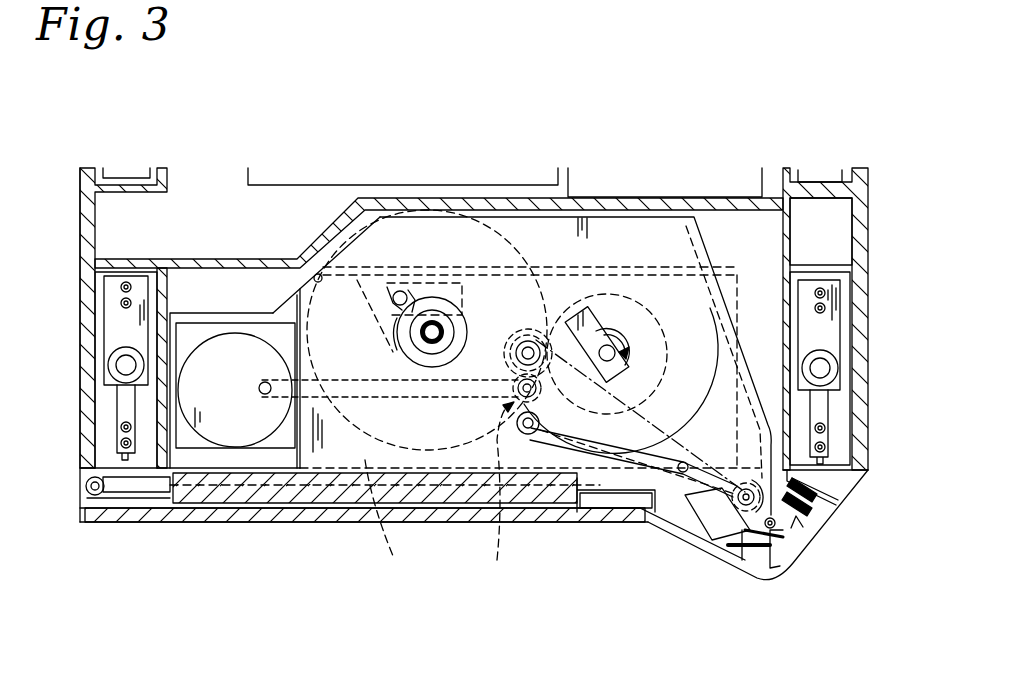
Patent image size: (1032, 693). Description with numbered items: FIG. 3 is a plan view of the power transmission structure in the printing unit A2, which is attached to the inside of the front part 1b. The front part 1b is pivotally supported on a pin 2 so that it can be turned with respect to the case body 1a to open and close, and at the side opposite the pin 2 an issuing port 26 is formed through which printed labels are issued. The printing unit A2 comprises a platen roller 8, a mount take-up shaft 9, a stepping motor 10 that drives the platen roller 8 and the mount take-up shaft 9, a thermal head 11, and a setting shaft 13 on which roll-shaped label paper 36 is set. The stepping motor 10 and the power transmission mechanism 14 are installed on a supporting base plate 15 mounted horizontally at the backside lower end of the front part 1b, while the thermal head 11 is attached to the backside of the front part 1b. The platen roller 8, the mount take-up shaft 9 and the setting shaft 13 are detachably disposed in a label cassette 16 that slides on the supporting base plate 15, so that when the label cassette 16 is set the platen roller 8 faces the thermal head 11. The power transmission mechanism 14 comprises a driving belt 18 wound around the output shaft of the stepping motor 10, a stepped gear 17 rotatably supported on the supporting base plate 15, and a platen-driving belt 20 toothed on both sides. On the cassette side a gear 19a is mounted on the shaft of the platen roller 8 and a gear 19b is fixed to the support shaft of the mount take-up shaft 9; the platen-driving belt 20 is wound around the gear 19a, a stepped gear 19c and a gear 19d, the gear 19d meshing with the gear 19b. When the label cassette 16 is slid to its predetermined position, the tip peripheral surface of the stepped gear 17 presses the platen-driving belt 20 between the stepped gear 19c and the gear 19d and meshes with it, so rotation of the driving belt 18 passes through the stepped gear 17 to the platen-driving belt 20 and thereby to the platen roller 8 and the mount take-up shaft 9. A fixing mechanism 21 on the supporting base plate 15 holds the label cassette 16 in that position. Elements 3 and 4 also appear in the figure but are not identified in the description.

The case body 1a is at (855, 215).
The front part 1b is at (325, 517).
The pin 2 is at (97, 494).
The tape feed direction 3 is at (796, 516).
The guide rail 4 is at (111, 290).
The platen roller 8 is at (733, 458).
The mount take-up shaft 9 is at (640, 340).
The stepping motor 10 is at (237, 425).
The thermal head 11 is at (712, 513).
The setting shaft 13 is at (450, 353).
The power transmission mechanism 14 is at (561, 498).
The supporting base plate 15 is at (203, 320).
The label cassette 16 is at (670, 243).
The stepped gear 17 is at (541, 418).
The driving belt 18 is at (370, 397).
The gear 19a is at (752, 520).
The gear 19b is at (622, 300).
The stepped gear 19c is at (531, 328).
The gear 19d is at (553, 440).
The platen-driving belt 20 is at (652, 420).
The fixing mechanism 21 is at (399, 278).
The issuing port 26 is at (823, 520).
The label paper 36 is at (401, 520).
The printing unit A2 is at (278, 294).